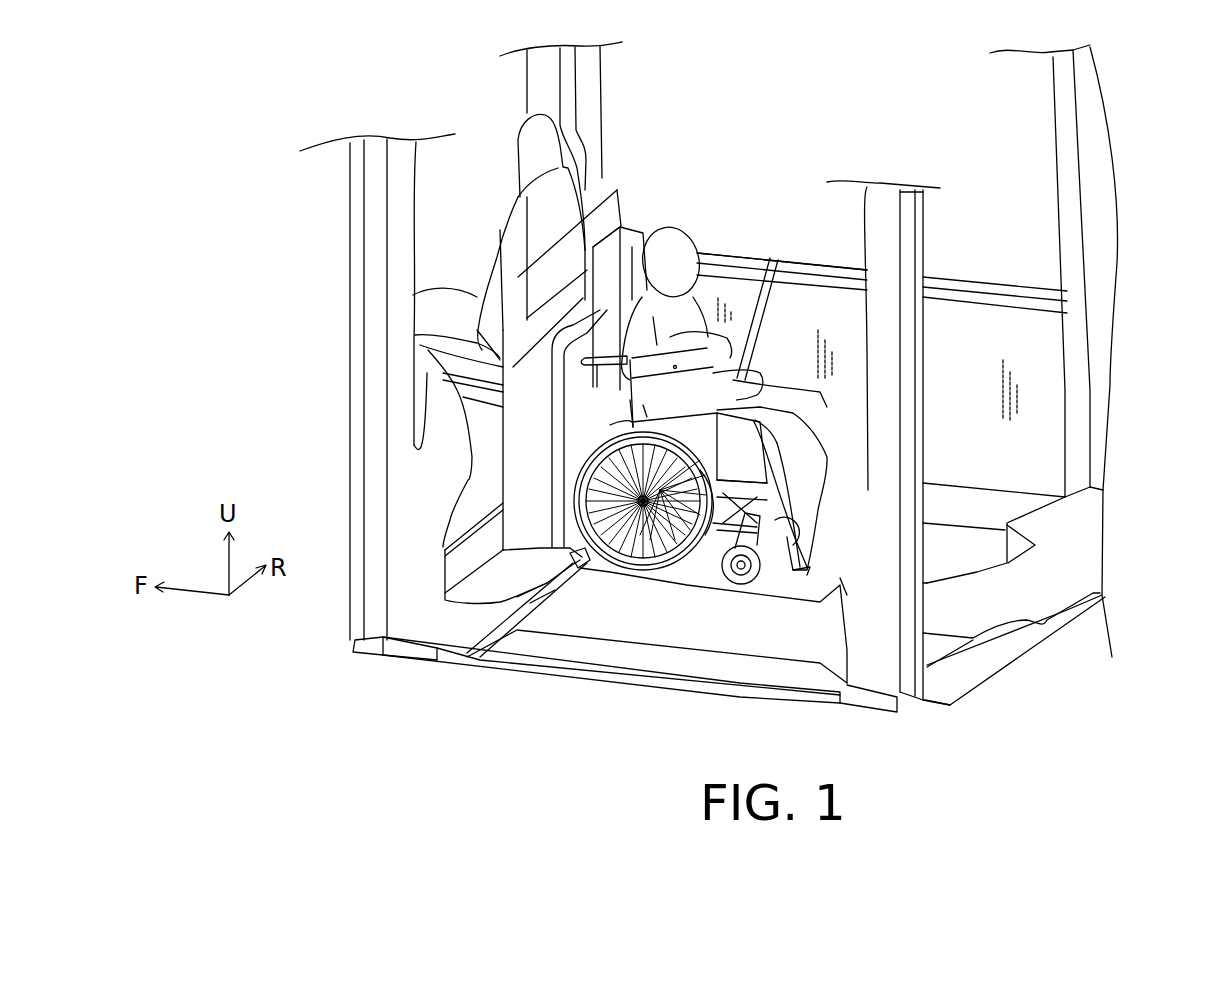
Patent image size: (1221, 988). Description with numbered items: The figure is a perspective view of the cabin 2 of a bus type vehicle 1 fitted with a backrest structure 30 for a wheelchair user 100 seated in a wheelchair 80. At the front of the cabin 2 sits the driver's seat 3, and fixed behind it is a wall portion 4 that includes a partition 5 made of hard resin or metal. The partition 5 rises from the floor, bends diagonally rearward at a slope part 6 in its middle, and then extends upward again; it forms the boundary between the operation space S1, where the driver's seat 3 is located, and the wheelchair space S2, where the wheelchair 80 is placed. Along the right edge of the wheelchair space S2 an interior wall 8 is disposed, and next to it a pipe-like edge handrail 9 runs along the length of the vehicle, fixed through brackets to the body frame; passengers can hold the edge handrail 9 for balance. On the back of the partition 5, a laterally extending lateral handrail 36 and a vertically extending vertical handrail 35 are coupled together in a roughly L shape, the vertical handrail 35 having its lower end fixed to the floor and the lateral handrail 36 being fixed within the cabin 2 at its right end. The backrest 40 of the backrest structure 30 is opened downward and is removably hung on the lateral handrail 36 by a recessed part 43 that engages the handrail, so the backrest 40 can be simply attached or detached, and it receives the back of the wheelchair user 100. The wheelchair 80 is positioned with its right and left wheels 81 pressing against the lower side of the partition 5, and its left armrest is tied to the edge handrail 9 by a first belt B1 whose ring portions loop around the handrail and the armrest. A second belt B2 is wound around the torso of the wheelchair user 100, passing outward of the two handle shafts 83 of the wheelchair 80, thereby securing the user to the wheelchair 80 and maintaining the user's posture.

The vehicle 1 is at (1132, 270).
The cabin 2 is at (981, 461).
The driver's seat 3 is at (527, 160).
The wall portion 4 is at (616, 175).
The partition 5 is at (623, 190).
The slope part 6 is at (530, 326).
The interior wall 8 is at (950, 320).
The edge handrail 9 is at (818, 260).
The backrest structure 30 is at (643, 208).
The vertical handrail 35 is at (558, 480).
The lateral handrail 36 is at (590, 323).
The backrest 40 is at (603, 270).
The recessed part 43 is at (608, 370).
The wheelchair 80 is at (760, 457).
The wheels 81 is at (683, 575).
The handle shafts 83 is at (630, 407).
The wheelchair user 100 is at (687, 227).
The first belt B1 is at (747, 285).
The second belt B2 is at (742, 350).
The operation space S1 is at (473, 185).
The wheelchair space S2 is at (858, 318).